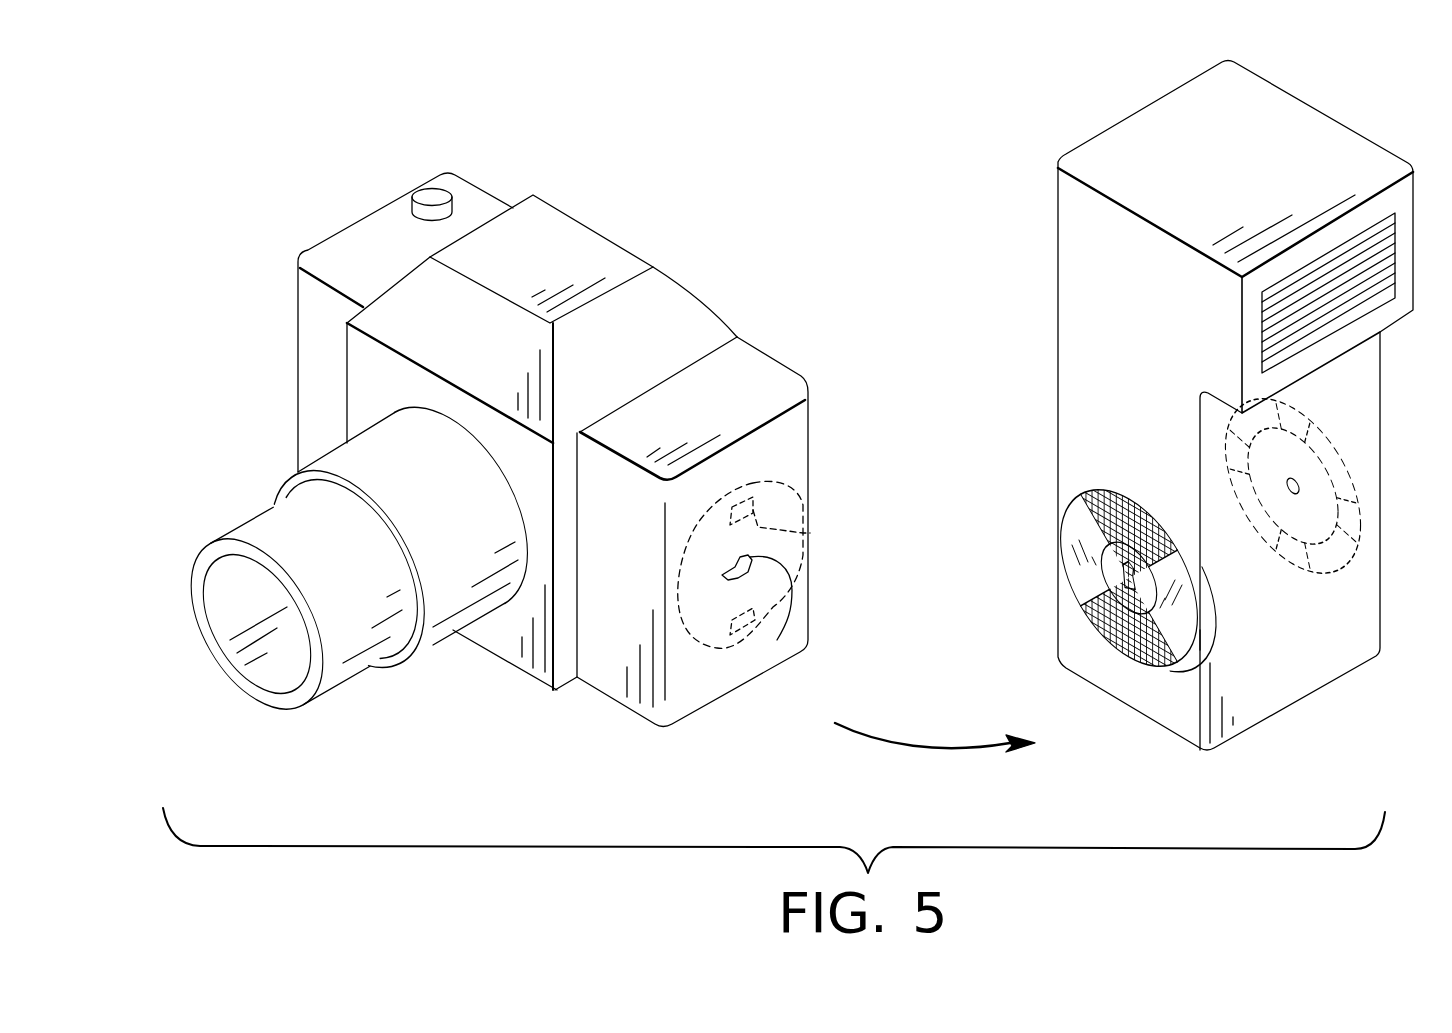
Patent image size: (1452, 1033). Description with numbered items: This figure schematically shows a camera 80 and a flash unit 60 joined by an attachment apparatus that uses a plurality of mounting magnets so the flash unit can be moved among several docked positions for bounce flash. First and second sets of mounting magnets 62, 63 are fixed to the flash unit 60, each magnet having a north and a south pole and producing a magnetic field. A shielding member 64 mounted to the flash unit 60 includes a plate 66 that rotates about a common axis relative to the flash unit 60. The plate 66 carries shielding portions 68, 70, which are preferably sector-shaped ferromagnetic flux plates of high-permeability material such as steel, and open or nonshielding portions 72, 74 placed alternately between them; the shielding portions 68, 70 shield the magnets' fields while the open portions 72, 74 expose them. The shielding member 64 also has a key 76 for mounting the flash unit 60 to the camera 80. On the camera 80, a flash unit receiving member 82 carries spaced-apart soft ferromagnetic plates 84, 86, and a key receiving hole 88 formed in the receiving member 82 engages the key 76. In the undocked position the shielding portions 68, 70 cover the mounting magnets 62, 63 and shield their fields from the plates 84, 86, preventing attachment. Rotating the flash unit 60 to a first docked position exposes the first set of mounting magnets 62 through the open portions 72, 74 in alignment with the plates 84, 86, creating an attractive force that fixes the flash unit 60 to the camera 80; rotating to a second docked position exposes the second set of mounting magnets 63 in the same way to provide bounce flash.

The flash unit 60 is at (1167, 105).
The first set of mounting magnets 62 is at (1307, 408).
The second set of mounting magnets 63 is at (1227, 462).
The shielding member 64 is at (1067, 510).
The plate 66 is at (1130, 497).
The shielding portion 68 is at (1075, 495).
The shielding portion 70 is at (1133, 663).
The open portion 72 is at (1058, 538).
The open portion 74 is at (1200, 638).
The key 76 is at (1082, 618).
The camera 80 is at (617, 253).
The flash unit receiving member 82 is at (791, 478).
The soft ferromagnetic plate 84 is at (810, 533).
The soft ferromagnetic plate 86 is at (767, 633).
The key receiving hole 88 is at (805, 623).